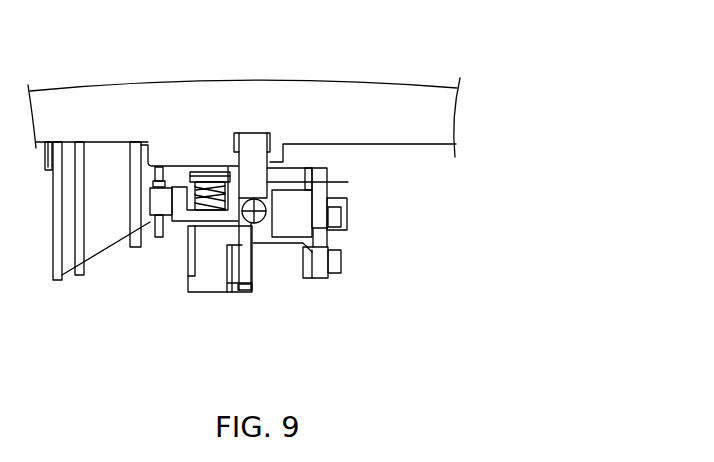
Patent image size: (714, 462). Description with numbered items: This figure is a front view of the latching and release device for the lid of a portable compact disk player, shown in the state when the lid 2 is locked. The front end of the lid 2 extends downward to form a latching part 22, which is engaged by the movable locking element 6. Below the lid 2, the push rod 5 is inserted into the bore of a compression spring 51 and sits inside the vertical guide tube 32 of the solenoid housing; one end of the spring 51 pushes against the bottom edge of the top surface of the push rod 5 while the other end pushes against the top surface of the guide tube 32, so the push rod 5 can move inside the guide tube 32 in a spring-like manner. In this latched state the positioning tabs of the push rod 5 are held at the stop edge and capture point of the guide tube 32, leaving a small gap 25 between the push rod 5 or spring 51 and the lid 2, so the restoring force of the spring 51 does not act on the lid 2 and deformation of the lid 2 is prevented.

The lid 2 is at (367, 103).
The push rod 5 is at (228, 185).
The movable locking element 6 is at (255, 158).
The latching part 22 is at (182, 150).
The gap 25 is at (195, 167).
The vertical guide tube 32 is at (203, 262).
The compression spring 51 is at (208, 203).